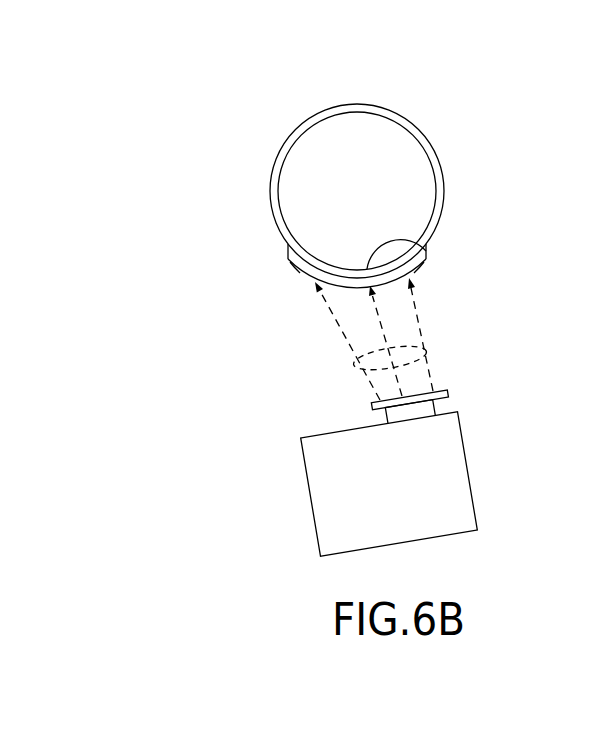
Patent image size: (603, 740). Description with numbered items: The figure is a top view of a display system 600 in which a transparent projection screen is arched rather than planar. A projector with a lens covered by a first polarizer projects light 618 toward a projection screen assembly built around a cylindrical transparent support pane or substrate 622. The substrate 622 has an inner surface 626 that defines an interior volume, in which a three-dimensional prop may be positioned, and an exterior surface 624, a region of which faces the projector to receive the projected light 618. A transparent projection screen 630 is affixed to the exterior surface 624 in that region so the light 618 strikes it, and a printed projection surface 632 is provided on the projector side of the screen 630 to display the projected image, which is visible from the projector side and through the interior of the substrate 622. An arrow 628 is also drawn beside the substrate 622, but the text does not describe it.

The display system 600 is at (331, 286).
The light 618 is at (427, 355).
The support pane or substrate 622 is at (275, 130).
The exterior surface 624 is at (288, 248).
The inner surface 626 is at (421, 241).
The direction arrow 628 is at (210, 206).
The transparent projection screen 630 is at (427, 262).
The printed projection surface 632 is at (294, 262).